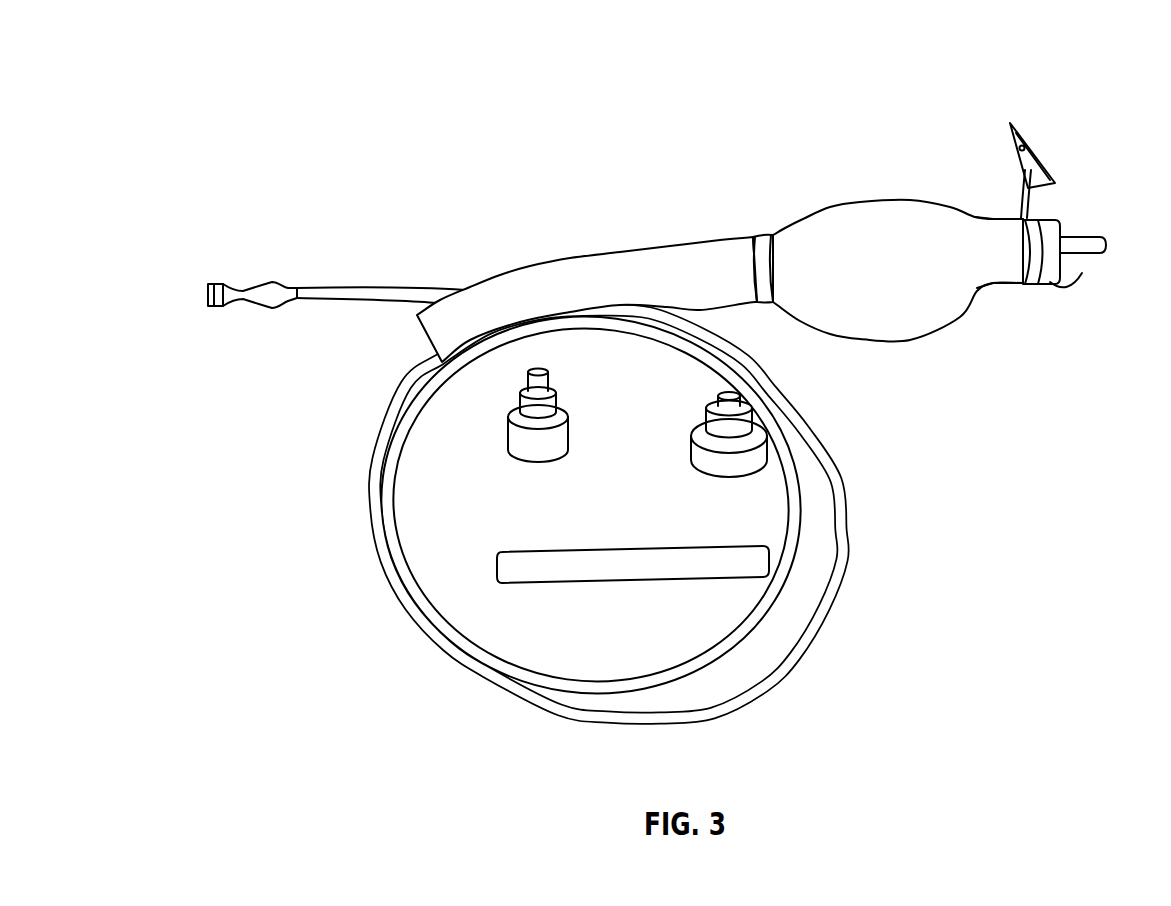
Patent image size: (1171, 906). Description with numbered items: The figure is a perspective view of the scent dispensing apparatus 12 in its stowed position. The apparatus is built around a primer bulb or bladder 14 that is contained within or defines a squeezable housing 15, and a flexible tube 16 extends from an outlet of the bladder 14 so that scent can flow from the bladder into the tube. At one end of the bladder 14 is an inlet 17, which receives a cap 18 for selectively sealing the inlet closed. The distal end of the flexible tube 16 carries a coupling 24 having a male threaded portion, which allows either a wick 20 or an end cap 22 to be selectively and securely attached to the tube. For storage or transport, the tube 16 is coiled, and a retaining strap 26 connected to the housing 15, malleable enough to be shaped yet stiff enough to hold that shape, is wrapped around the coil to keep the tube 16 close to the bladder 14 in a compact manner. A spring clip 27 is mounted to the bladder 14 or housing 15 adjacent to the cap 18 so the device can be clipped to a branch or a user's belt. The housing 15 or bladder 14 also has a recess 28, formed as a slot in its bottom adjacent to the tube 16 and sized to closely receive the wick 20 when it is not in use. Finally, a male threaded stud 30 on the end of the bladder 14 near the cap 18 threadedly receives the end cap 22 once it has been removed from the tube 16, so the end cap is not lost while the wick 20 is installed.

The scent dispensing apparatus 12 is at (720, 100).
The primer bulb or bladder 14 is at (852, 228).
The squeezable housing 15 is at (947, 207).
The flexible tube 16 is at (661, 688).
The inlet 17 is at (1057, 219).
The cap 18 is at (1102, 253).
The wick 20 is at (580, 582).
The end cap 22 is at (260, 284).
The coupling 24 is at (288, 284).
The retaining strap 26 is at (778, 390).
The spring clip 27 is at (1030, 156).
The recess 28 is at (392, 331).
The male threaded stud 30 is at (1080, 279).